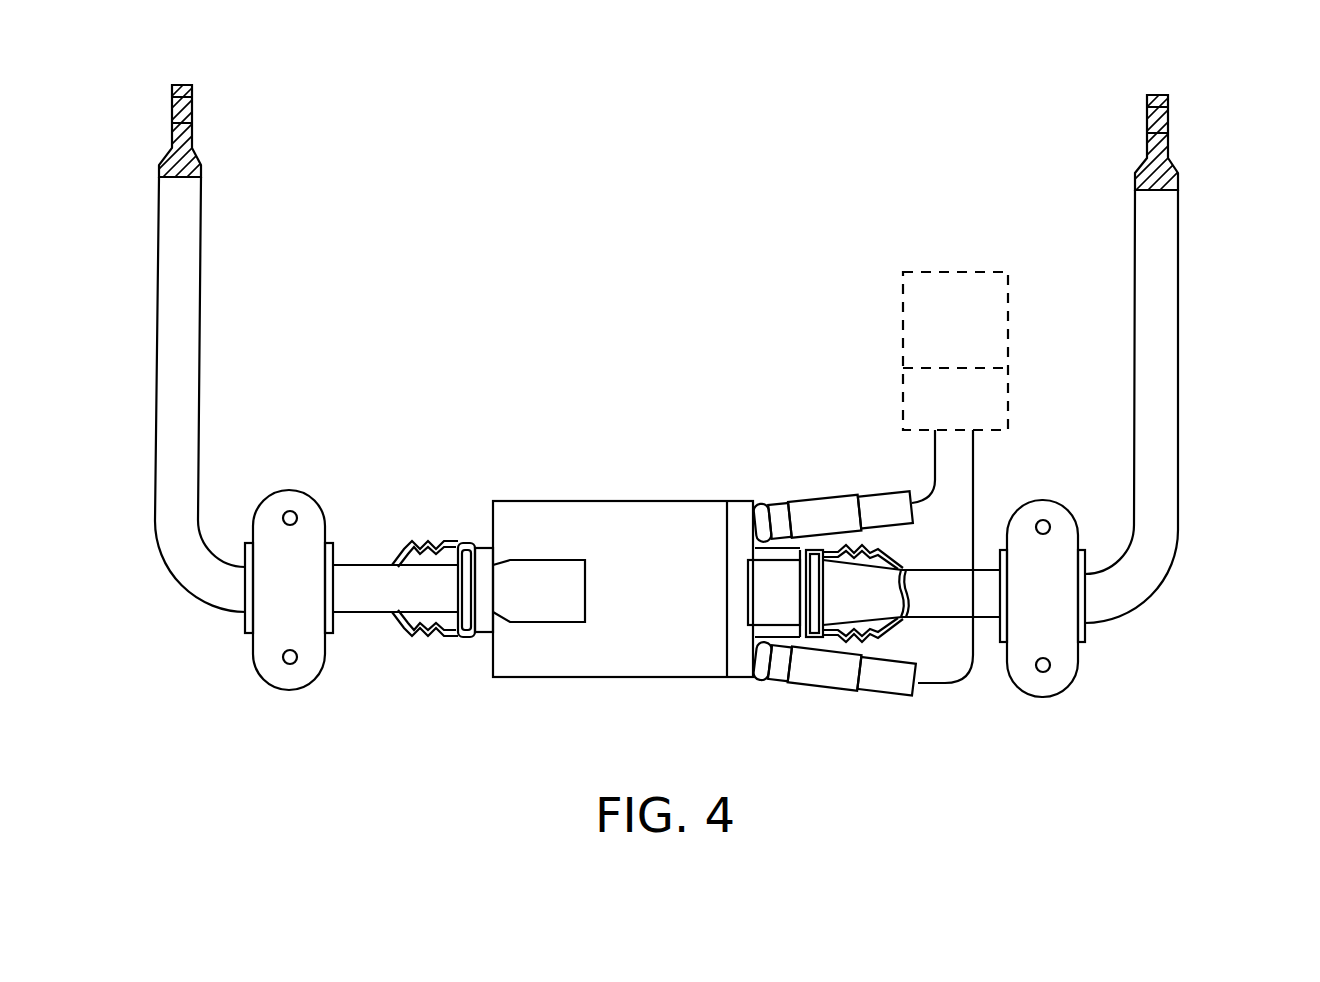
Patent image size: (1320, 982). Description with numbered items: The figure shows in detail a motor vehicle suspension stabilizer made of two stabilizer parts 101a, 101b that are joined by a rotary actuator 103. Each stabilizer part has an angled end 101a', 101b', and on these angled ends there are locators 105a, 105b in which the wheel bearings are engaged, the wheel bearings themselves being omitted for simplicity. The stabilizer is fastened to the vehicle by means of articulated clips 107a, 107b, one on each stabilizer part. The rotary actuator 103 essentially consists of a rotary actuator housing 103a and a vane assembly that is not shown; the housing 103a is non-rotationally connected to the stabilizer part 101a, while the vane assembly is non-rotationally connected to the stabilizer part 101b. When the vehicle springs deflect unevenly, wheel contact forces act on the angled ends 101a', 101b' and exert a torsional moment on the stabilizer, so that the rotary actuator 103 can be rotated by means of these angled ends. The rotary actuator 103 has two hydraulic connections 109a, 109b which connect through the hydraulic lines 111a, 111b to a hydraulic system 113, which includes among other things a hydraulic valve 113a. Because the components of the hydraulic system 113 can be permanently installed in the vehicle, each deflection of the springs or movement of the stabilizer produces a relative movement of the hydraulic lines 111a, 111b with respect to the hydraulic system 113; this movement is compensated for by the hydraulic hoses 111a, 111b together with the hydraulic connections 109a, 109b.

The stabilizer part 101a is at (912, 632).
The angled end 101a' is at (1198, 406).
The stabilizer part 101b is at (413, 618).
The angled end 101b' is at (236, 394).
The rotary actuator 103 is at (646, 597).
The rotary actuator housing 103a is at (655, 517).
The locator 105a is at (1165, 120).
The locator 105b is at (185, 115).
The articulated clip 107a is at (1065, 670).
The articulated clip 107b is at (260, 660).
The hydraulic connection 109a is at (775, 675).
The hydraulic connection 109b is at (775, 512).
The hydraulic line 111a is at (848, 680).
The hydraulic line 111b is at (835, 512).
The hydraulic system 113 is at (928, 351).
The hydraulic valve 113a is at (985, 391).